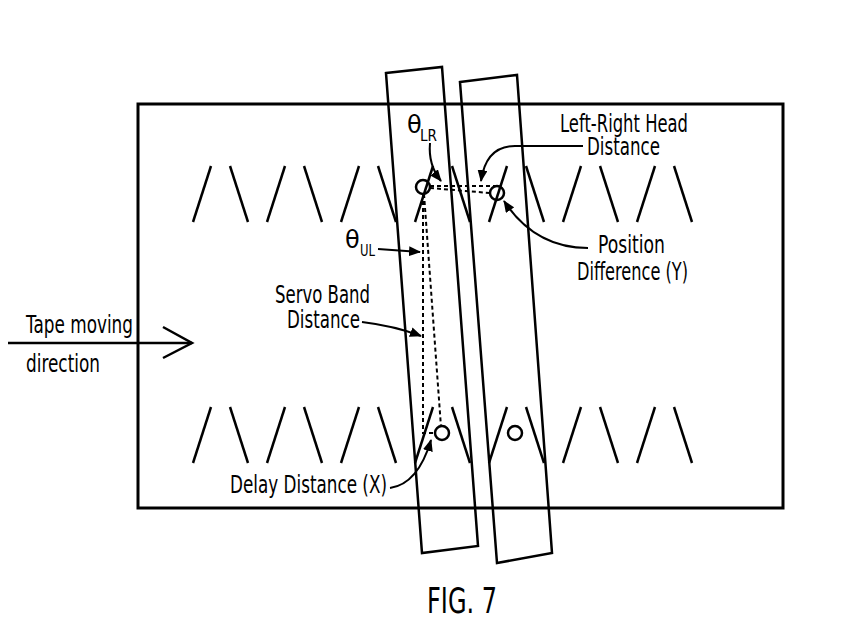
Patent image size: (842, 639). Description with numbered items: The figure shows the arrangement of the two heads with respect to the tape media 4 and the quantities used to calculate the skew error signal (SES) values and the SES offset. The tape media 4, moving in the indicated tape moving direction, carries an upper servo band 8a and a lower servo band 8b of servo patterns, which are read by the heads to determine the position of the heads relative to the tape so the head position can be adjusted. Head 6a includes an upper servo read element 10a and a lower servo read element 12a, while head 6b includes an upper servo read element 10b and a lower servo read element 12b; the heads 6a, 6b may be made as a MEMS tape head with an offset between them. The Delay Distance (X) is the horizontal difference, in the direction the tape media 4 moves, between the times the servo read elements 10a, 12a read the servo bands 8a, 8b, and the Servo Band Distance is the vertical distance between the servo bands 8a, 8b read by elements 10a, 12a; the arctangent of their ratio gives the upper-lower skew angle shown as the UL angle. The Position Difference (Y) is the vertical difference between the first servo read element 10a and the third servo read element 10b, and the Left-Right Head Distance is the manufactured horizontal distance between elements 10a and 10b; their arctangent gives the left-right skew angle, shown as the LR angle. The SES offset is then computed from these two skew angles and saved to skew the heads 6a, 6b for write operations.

The tape media 4 is at (172, 103).
The head 6a is at (413, 69).
The head 6b is at (487, 78).
The servo band 8a is at (706, 190).
The servo band 8b is at (706, 430).
The servo read element 10a is at (417, 183).
The servo read element 10b is at (498, 202).
The servo read element 12a is at (447, 441).
The servo read element 12b is at (520, 441).